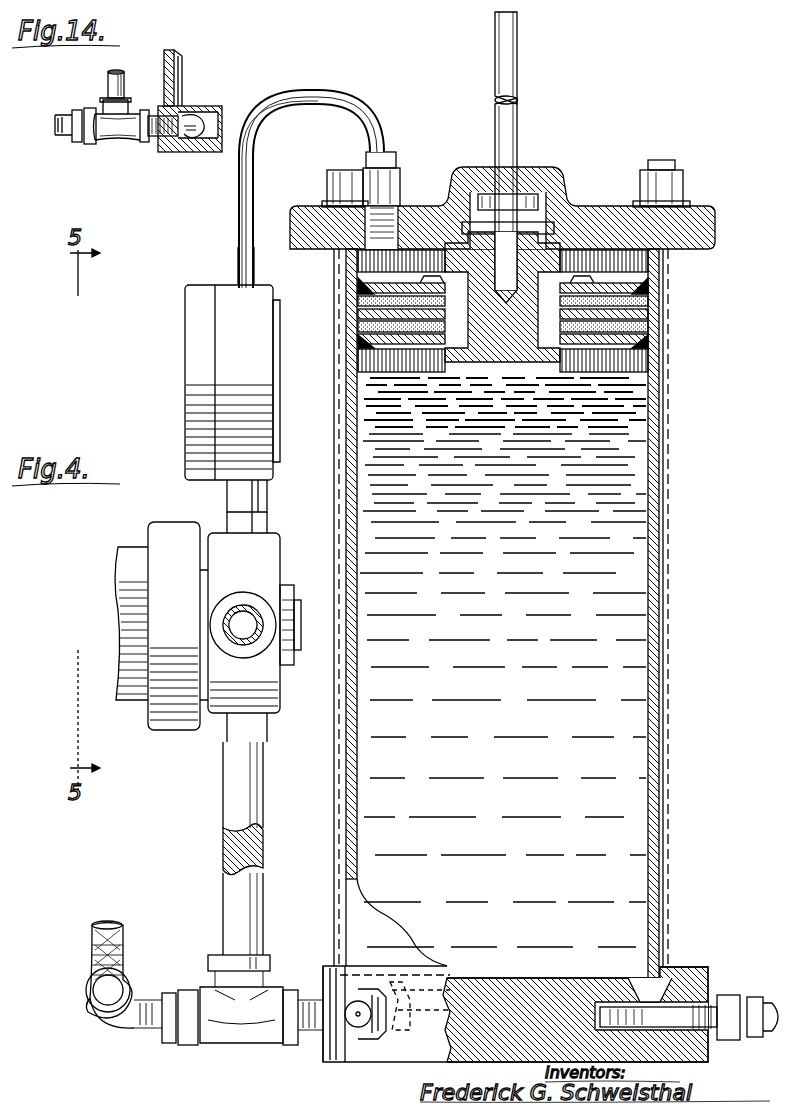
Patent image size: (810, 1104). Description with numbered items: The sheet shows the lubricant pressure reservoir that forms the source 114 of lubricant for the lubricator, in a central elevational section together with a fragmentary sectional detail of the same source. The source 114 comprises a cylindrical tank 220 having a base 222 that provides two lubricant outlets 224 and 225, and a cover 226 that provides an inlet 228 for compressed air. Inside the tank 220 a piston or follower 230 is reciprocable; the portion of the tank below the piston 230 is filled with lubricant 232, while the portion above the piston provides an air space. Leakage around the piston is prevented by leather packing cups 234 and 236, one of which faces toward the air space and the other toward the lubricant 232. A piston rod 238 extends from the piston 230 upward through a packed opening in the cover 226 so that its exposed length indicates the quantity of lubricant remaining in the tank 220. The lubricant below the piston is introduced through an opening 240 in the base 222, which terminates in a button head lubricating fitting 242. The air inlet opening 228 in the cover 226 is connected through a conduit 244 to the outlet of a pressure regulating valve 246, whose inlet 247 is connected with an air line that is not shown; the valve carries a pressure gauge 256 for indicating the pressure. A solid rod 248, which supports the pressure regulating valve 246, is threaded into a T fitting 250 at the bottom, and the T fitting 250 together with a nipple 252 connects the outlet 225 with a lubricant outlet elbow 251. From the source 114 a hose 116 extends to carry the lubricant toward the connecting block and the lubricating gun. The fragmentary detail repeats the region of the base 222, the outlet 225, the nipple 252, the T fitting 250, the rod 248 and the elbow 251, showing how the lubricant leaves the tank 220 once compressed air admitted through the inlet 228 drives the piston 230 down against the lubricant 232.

In FIG. 4, the source of lubricant 114 is at (668, 553).
In FIG. 4, the hose 116 is at (95, 952).
In FIG. 14, the cylindrical tank 220 is at (186, 108).
In FIG. 4, the cylindrical tank 220 is at (655, 660).
In FIG. 14, the base 222 is at (205, 150).
In FIG. 4, the base 222 is at (326, 1010).
In FIG. 4, the lubricant outlet 224 is at (690, 1006).
In FIG. 14, the lubricant outlet 225 is at (196, 122).
In FIG. 4, the cover 226 is at (684, 238).
In FIG. 4, the inlet for compressed air 228 is at (398, 248).
In FIG. 4, the piston 230 is at (655, 314).
In FIG. 4, the lubricant 232 is at (585, 630).
In FIG. 4, the leather packing cup 234 is at (652, 296).
In FIG. 4, the leather packing cup 236 is at (640, 345).
In FIG. 4, the piston rod 238 is at (519, 118).
In FIG. 4, the opening 240 is at (400, 1010).
In FIG. 4, the button head lubricating fitting 242 is at (351, 1040).
In FIG. 4, the conduit 244 is at (238, 248).
In FIG. 4, the pressure regulating valve 246 is at (176, 530).
In FIG. 4, the inlet of the pressure regulating valve 247 is at (250, 640).
In FIG. 14, the solid rod 248 is at (108, 86).
In FIG. 4, the solid rod 248 is at (226, 781).
In FIG. 14, the T fitting 250 is at (120, 138).
In FIG. 4, the T fitting 250 is at (250, 1043).
In FIG. 14, the lubricant outlet elbow 251 is at (70, 114).
In FIG. 4, the lubricant outlet elbow 251 is at (136, 1012).
In FIG. 14, the nipple 252 is at (150, 140).
In FIG. 4, the nipple 252 is at (318, 1032).
In FIG. 4, the pressure gauge 256 is at (185, 436).